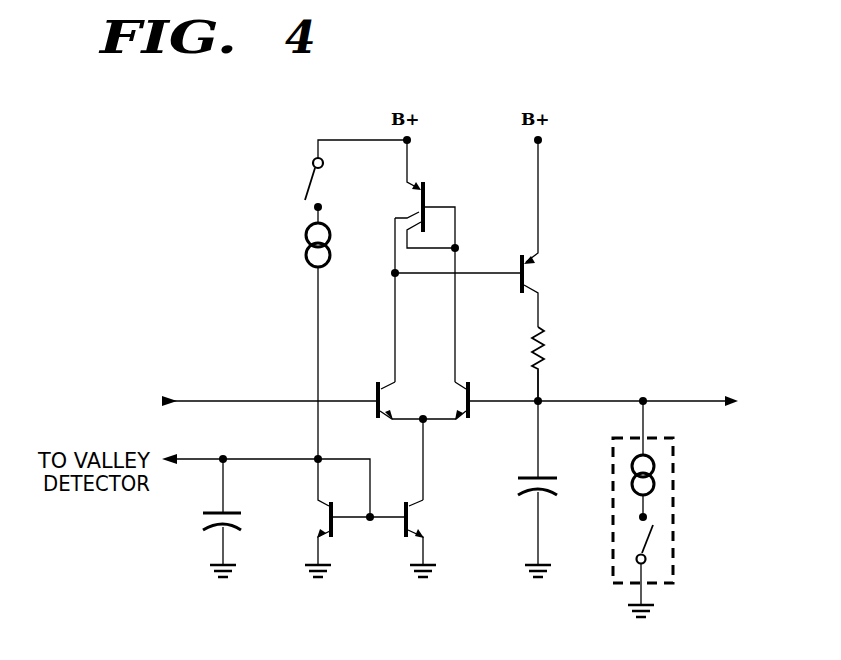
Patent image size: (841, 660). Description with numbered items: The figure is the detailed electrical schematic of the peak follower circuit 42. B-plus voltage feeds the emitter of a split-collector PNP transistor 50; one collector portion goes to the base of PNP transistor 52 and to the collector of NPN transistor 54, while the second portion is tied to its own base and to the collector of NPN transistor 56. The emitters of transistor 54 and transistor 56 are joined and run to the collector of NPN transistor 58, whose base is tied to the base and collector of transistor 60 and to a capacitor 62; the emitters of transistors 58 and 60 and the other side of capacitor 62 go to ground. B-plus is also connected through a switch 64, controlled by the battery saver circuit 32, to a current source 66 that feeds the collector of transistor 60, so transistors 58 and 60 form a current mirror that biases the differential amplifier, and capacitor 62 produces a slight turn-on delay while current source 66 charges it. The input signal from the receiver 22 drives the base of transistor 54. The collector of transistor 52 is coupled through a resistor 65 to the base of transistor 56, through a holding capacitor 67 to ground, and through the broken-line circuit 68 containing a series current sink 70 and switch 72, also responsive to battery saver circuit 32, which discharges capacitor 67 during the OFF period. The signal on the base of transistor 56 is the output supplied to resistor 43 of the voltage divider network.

The peak follower circuit 42 is at (128, 150).
The PNP transistor 50 is at (432, 190).
The PNP transistor 52 is at (542, 273).
The NPN transistor 54 is at (370, 390).
The NPN transistor 56 is at (475, 392).
The NPN transistor 58 is at (428, 514).
The transistor 60 is at (312, 512).
The capacitor 62 is at (246, 522).
The switch 64 is at (327, 188).
The resistor 65 is at (552, 346).
The current source 66 is at (305, 255).
The holding capacitor 67 is at (512, 481).
The circuit arrangement 68 is at (648, 509).
The current sink 70 is at (667, 470).
The switch 72 is at (633, 540).
The receiver 22 is at (234, 414).
The battery saver circuit 32 is at (720, 542).
The resistor 43 is at (623, 414).